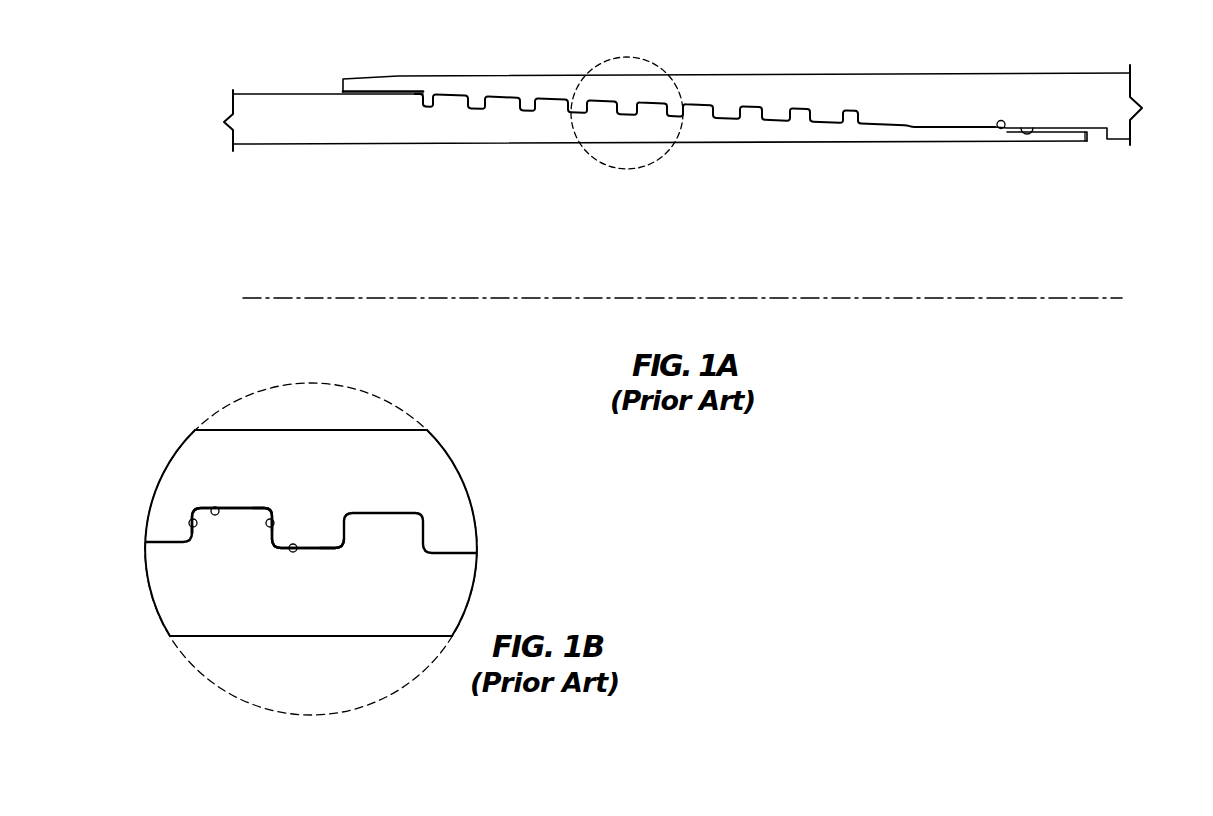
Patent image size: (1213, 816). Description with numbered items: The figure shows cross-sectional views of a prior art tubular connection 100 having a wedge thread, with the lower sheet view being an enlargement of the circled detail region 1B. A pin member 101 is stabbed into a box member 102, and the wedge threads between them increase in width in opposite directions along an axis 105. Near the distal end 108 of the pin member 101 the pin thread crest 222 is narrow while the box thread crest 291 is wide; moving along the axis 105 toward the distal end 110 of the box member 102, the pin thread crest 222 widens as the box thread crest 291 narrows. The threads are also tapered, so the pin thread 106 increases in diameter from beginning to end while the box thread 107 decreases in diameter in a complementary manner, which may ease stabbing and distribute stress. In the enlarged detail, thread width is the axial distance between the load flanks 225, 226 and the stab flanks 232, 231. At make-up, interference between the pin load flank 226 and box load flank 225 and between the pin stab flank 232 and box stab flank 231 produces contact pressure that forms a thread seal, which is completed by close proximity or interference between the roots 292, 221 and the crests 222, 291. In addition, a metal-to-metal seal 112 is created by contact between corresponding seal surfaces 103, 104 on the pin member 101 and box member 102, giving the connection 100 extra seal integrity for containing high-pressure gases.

In FIG. 1A, the tubular connection 100 is at (979, 41).
In FIG. 1A, the pin member 101 is at (323, 133).
In FIG. 1B, the pin member 101 is at (223, 614).
In FIG. 1A, the box member 102 is at (957, 110).
In FIG. 1B, the box member 102 is at (418, 472).
In FIG. 1A, the seal surface 103 is at (1010, 130).
In FIG. 1A, the seal surface 104 is at (1027, 127).
In FIG. 1A, the axis 105 is at (982, 298).
In FIG. 1B, the pin thread 106 is at (254, 552).
In FIG. 1B, the box thread 107 is at (338, 539).
In FIG. 1A, the distal end 108 is at (1084, 142).
In FIG. 1A, the distal end 110 is at (372, 77).
In FIG. 1A, the metal-to-metal seal 112 is at (997, 98).
In FIG. 1A, the detail region 1B is at (648, 60).
In FIG. 1B, the root 221 is at (215, 507).
In FIG. 1B, the pin thread crest 222 is at (253, 507).
In FIG. 1B, the box load flank 225 is at (190, 521).
In FIG. 1B, the pin load flank 226 is at (188, 531).
In FIG. 1B, the box stab flank 231 is at (277, 525).
In FIG. 1B, the pin stab flank 232 is at (274, 521).
In FIG. 1B, the box thread crest 291 is at (327, 553).
In FIG. 1B, the root 292 is at (293, 553).